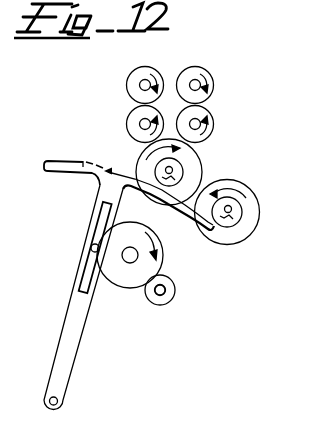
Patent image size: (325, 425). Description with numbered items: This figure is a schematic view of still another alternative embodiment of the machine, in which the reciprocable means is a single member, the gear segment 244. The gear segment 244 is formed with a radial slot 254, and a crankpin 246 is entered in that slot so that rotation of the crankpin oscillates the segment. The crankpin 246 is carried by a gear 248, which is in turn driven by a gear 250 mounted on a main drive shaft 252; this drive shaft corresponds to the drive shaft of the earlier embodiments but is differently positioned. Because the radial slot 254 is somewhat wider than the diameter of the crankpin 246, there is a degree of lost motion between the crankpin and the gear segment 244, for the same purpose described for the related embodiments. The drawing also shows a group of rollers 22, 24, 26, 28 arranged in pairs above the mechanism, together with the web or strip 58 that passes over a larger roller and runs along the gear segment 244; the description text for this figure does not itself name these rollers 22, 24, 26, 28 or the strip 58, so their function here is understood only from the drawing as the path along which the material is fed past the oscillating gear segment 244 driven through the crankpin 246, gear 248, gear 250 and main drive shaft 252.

The roller 22 is at (213, 79).
The roller 24 is at (214, 124).
The roller 26 is at (127, 79).
The roller 28 is at (126, 123).
The web strip 58 is at (143, 158).
The gear segment 244 is at (82, 133).
The crankpin 246 is at (91, 248).
The gear 248 is at (164, 257).
The gear 250 is at (176, 292).
The main drive shaft 252 is at (162, 296).
The radial slot 254 is at (102, 214).